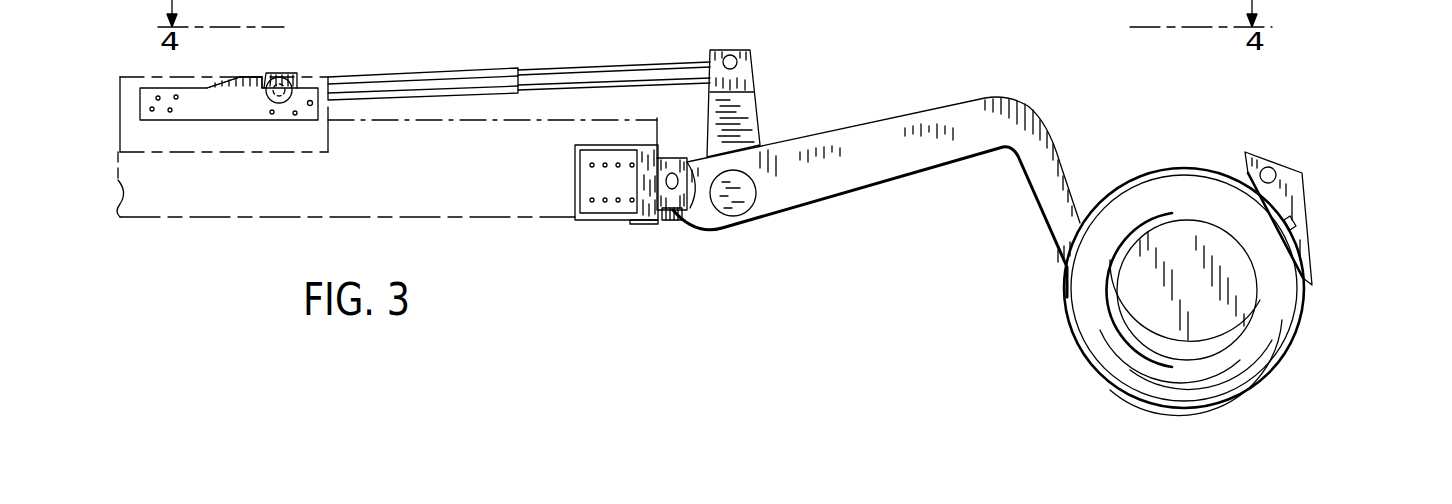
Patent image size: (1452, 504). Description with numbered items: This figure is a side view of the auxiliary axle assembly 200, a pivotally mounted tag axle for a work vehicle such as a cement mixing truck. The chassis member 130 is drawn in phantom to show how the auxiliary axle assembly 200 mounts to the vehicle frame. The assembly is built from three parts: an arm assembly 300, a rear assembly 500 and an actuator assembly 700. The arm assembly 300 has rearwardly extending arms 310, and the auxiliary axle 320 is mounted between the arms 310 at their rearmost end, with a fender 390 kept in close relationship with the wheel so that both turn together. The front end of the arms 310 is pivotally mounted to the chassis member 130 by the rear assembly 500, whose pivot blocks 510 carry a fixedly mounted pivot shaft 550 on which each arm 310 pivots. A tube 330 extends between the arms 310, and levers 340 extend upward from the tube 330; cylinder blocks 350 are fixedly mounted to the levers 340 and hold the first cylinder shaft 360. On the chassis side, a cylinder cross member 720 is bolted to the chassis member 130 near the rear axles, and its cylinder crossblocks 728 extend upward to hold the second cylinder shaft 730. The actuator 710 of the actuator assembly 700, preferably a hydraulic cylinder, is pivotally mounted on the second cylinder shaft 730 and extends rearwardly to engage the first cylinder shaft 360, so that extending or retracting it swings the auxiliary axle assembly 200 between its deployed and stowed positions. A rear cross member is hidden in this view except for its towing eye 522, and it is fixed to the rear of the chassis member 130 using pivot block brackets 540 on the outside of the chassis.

The chassis member 130 is at (275, 195).
The auxiliary axle assembly 200 is at (941, 270).
The arm assembly 300 is at (776, 124).
The arm 310 is at (942, 108).
The auxiliary axle 320 is at (1150, 300).
The tube 330 is at (737, 200).
The lever 340 is at (760, 145).
The cylinder block 350 is at (743, 113).
The first cylinder shaft 360 is at (730, 55).
The fender 390 is at (1300, 200).
The rear assembly 500 is at (645, 236).
The pivot block 510 is at (670, 157).
The towing eye 522 is at (674, 212).
The pivot block bracket 540 is at (602, 207).
The pivot shaft 550 is at (672, 190).
The actuator assembly 700 is at (314, 58).
The actuator 710 is at (502, 78).
The cylinder cross member 720 is at (190, 110).
The cylinder crossblock 728 is at (233, 84).
The second cylinder shaft 730 is at (292, 84).